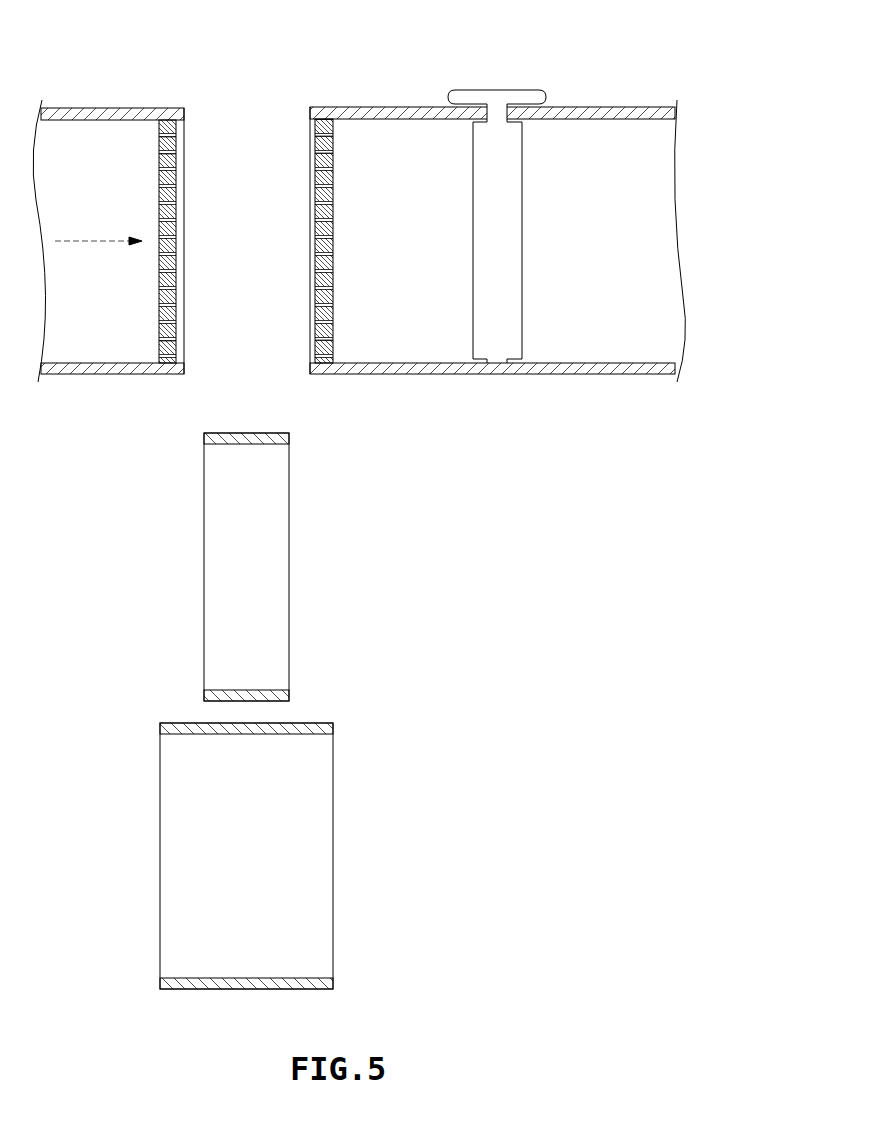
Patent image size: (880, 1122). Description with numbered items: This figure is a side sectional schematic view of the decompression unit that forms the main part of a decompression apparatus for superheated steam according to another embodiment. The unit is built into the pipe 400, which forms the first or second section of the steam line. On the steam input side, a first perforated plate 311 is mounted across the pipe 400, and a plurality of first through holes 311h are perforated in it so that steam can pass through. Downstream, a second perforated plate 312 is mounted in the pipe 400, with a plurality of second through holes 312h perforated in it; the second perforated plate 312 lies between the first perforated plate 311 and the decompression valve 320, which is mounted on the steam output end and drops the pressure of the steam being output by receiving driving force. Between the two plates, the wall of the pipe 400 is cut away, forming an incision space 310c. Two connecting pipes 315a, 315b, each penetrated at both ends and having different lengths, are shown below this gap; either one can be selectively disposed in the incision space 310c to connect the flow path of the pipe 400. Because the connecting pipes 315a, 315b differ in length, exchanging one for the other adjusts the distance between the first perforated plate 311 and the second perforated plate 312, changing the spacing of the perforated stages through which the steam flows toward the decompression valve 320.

The pipe 400 is at (103, 108).
The first perforated plate 311 is at (164, 120).
The first through holes 311h is at (165, 143).
The incision space 310c is at (234, 246).
The second perforated plate 312 is at (327, 117).
The second through holes 312h is at (333, 160).
The decompression valve 320 is at (517, 89).
The connecting pipe 315a is at (289, 517).
The connecting pipe 315b is at (333, 929).